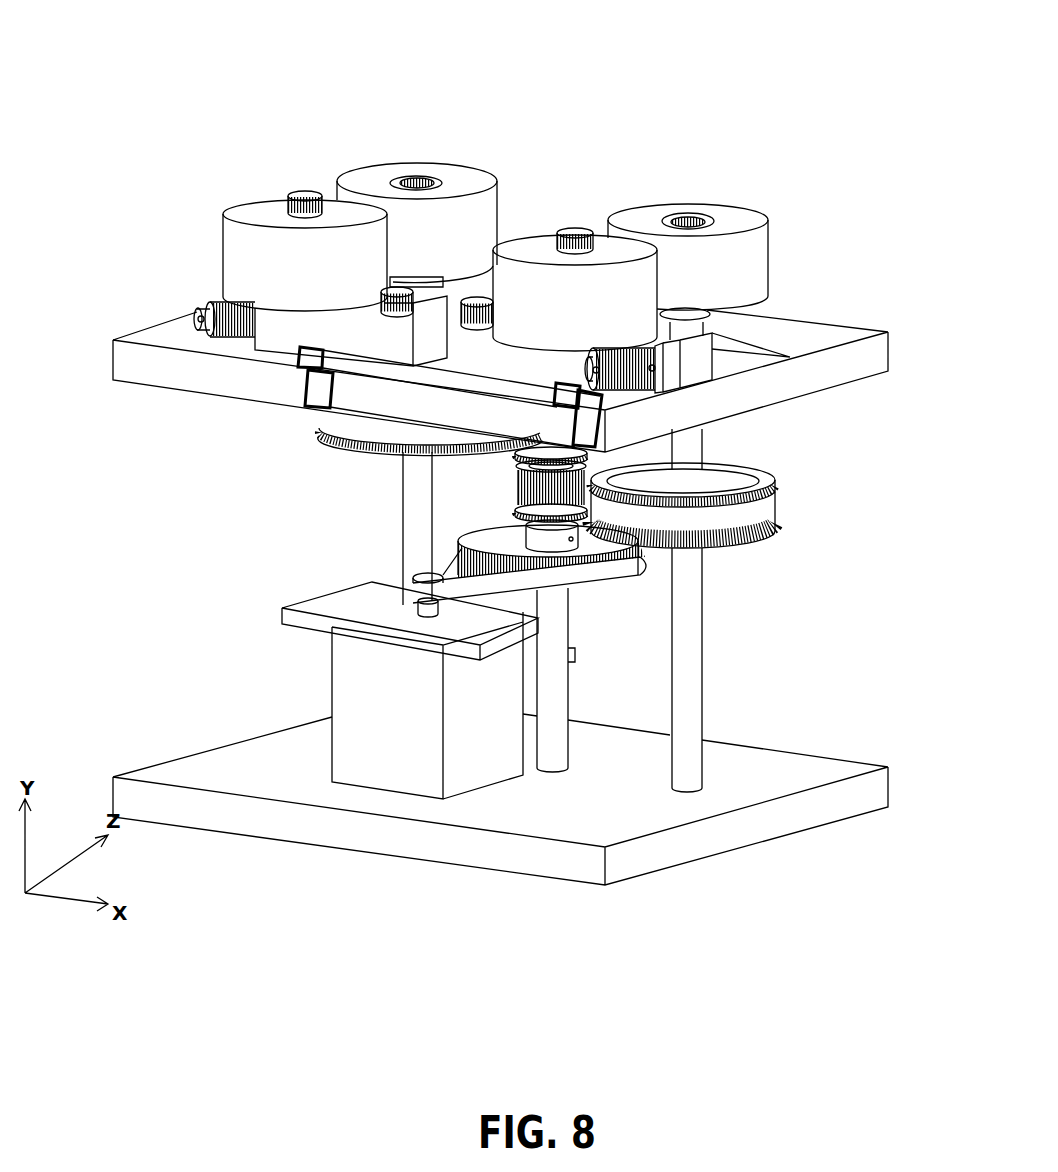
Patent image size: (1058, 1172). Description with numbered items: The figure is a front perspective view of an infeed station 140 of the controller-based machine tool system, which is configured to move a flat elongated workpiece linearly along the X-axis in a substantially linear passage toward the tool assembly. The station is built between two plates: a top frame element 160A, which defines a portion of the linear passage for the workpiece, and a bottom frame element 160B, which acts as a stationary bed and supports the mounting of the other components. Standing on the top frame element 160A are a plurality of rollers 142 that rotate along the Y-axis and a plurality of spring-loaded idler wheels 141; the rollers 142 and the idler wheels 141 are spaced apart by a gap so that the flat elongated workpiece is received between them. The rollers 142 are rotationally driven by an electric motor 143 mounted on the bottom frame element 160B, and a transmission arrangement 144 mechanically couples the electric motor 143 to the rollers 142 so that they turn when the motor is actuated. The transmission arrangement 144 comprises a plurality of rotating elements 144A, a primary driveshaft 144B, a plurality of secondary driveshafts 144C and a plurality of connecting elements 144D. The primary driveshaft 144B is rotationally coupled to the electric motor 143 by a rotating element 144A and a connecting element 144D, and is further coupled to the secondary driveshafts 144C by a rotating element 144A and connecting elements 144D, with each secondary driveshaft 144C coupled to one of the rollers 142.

The infeed station 140 is at (694, 98).
The spring-loaded idler wheels 141 is at (337, 262).
The rollers 142 is at (432, 212).
The electric motor 143 is at (430, 712).
The transmission arrangement 144 is at (706, 633).
The rotating elements 144A is at (445, 435).
The primary driveshaft 144B is at (558, 705).
The secondary driveshafts 144C is at (415, 517).
The connecting elements 144D is at (443, 435).
The top frame element 160A is at (758, 327).
The bottom frame element 160B is at (735, 765).